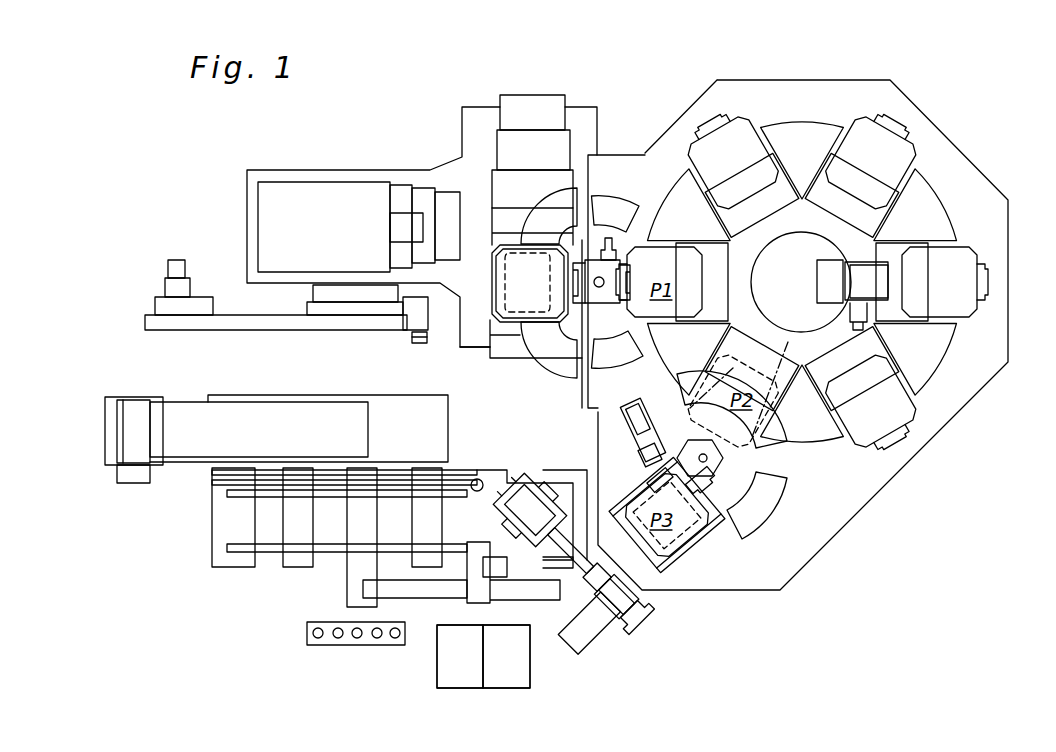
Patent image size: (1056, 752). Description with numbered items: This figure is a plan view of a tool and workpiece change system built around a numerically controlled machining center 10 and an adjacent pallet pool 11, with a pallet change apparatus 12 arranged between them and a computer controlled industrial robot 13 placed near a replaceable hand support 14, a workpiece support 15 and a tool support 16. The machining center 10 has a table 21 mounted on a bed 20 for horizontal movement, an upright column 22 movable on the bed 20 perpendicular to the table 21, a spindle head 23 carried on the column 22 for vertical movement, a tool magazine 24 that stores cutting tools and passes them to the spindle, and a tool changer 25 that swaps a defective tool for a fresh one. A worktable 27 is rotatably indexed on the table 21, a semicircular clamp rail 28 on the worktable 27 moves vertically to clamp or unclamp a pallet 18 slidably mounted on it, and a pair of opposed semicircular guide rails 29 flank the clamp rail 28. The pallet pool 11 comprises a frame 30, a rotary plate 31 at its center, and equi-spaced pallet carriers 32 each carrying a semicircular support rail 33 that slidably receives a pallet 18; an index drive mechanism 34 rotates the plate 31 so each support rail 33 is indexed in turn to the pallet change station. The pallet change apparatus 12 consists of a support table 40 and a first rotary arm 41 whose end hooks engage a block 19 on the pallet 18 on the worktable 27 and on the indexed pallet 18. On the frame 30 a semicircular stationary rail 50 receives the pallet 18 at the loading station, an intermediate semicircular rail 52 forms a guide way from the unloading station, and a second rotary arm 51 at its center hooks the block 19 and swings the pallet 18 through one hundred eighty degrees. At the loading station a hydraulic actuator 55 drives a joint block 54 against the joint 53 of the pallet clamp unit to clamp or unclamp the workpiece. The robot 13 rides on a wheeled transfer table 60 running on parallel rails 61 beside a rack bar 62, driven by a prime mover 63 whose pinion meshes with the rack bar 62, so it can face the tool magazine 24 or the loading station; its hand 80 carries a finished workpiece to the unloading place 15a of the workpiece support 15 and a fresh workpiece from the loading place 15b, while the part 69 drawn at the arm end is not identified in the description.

The numerically controlled machining center 10 is at (447, 157).
The pallet pool 11 is at (790, 78).
The pallet change apparatus 12 is at (607, 313).
The computer controlled industrial robot 13 is at (578, 588).
The replaceable hand support 14 is at (590, 650).
The workpiece support 15 is at (480, 690).
The unloading place 15a is at (507, 688).
The loading place 15b is at (455, 688).
The tool support 16 is at (357, 648).
The pallet 18 is at (705, 285).
The block 19 is at (990, 270).
The bed 20 is at (475, 113).
The table 21 is at (488, 340).
The upright column 22 is at (338, 188).
The spindle head 23 is at (400, 215).
The tool magazine 24 is at (280, 331).
The tool changer 25 is at (408, 341).
The worktable 27 is at (522, 361).
The semicircular clamp rail 28 is at (490, 278).
The semicircular guide rails 29 is at (562, 208).
The frame 30 is at (905, 108).
The rotary plate 31 is at (860, 232).
The pallet carriers 32 is at (714, 247).
The semicircular support rail 33 is at (660, 350).
The index drive mechanism 34 is at (622, 216).
The support table 40 is at (626, 155).
The first rotary arm 41 is at (606, 240).
The semicircular stationary rail 50 is at (700, 540).
The second rotary arm 51 is at (722, 465).
The intermediate semicircular rail 52 is at (775, 490).
The joint 53 is at (650, 488).
The joint block 54 is at (643, 460).
The hydraulic actuator 55 is at (640, 432).
The wheeled transfer table 60 is at (470, 508).
The parallel rails 61 is at (328, 512).
The rack bar 62 is at (268, 470).
The prime mover 63 is at (478, 480).
The hand 69 is at (612, 614).
The hand 80 is at (640, 620).